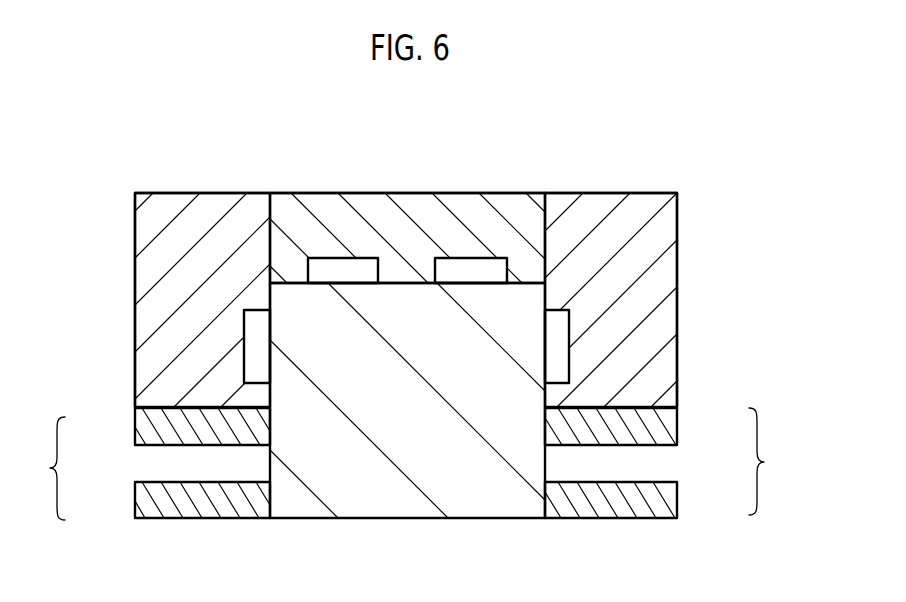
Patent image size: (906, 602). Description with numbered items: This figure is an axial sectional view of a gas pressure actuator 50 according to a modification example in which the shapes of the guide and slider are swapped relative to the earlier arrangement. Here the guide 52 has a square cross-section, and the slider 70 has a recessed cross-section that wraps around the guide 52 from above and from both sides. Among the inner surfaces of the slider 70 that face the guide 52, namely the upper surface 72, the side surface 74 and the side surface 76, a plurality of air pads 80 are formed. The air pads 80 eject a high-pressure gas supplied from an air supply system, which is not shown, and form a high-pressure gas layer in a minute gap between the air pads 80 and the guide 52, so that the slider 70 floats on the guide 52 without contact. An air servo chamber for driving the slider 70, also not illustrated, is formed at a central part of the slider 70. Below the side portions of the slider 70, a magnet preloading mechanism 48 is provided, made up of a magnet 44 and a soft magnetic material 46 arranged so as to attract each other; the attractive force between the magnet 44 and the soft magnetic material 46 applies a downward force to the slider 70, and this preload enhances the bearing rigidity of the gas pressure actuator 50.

The gas pressure actuator 50 is at (55, 162).
The guide 52 is at (397, 497).
The magnet 44 is at (163, 428).
The soft magnetic material 46 is at (163, 500).
The magnet preloading mechanism 48 is at (408, 464).
The slider 70 is at (700, 201).
The upper surface 72 is at (408, 281).
The side surface 74 is at (268, 296).
The side surface 76 is at (546, 295).
The air pads 80 is at (327, 271).